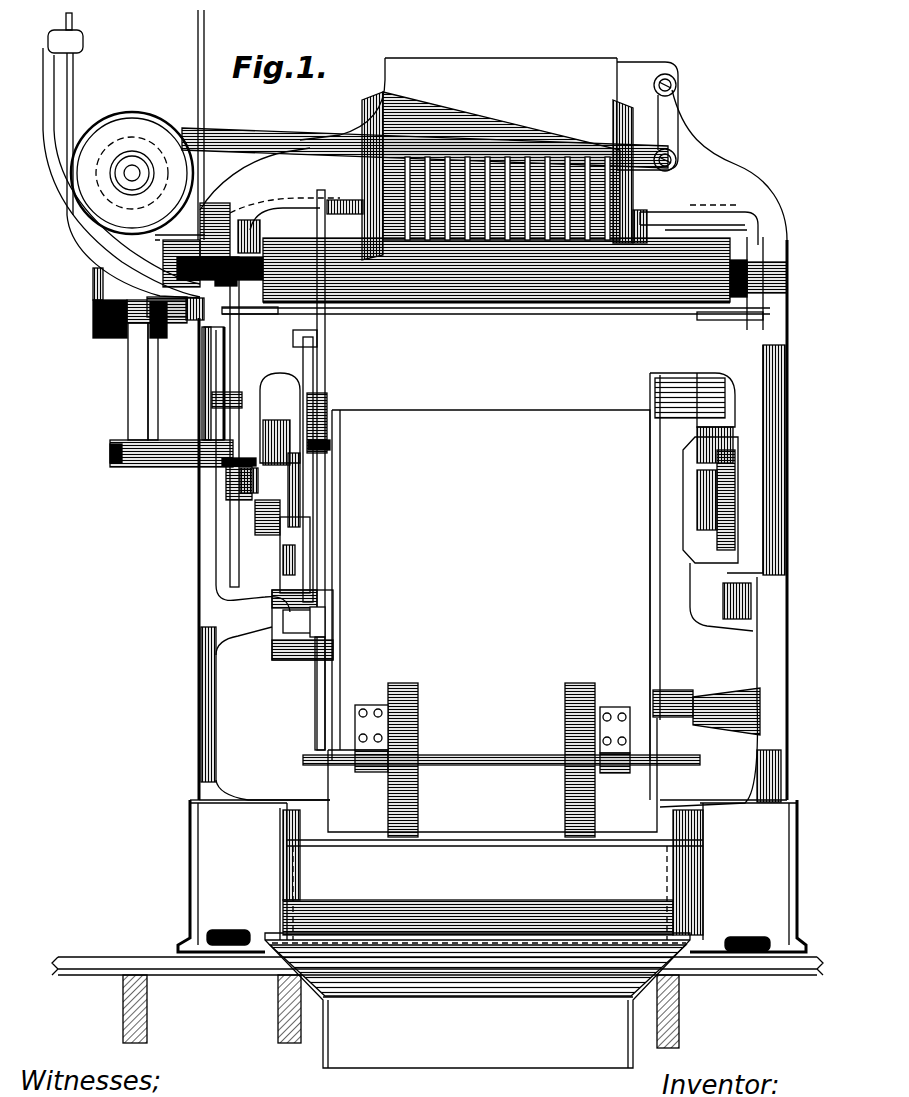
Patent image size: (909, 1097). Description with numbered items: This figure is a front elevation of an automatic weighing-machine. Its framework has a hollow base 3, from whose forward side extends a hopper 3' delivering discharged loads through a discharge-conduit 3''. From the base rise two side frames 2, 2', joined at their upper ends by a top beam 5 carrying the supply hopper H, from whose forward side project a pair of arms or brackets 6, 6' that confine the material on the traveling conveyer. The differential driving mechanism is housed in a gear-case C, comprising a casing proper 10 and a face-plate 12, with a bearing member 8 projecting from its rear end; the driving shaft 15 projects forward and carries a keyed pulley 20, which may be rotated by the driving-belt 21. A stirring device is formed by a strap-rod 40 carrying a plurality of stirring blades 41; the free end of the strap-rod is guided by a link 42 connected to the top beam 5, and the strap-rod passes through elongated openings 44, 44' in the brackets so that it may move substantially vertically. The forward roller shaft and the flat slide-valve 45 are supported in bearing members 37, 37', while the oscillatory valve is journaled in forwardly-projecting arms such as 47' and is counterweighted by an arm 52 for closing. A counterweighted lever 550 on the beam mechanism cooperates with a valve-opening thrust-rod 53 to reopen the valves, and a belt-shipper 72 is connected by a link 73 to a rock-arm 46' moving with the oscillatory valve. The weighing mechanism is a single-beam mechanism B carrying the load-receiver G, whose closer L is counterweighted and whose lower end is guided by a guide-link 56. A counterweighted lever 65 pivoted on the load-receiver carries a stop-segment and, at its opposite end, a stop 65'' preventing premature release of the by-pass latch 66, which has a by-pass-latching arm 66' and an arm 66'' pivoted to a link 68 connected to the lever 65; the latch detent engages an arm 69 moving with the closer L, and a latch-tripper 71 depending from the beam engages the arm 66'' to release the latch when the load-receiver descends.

The side frame 2 is at (247, 559).
The side frame 2' is at (733, 523).
The hollow base 3 is at (483, 876).
The hopper 3' is at (493, 871).
The discharge-conduit 3'' is at (477, 1000).
The top beam 5 is at (735, 175).
The arm or bracket 6 is at (361, 176).
The arm or bracket 6' is at (633, 171).
The bearing member 8 is at (176, 228).
The casing proper 10 is at (118, 338).
The face-plate 12 is at (94, 308).
The driving shaft or spindle 15 is at (128, 182).
The driving member or pulley 20 is at (150, 118).
The driving-belt 21 is at (197, 36).
The bearing member 37 is at (195, 383).
The bearing member 37' is at (730, 335).
The strap-rod 40 is at (285, 140).
The stirring arms or blades 41 is at (547, 228).
The link 42 is at (668, 118).
The elongated opening 44 is at (501, 166).
The elongated opening 44' is at (582, 133).
The reciprocatory valve or slide-valve 45 is at (278, 314).
The rock-arm 46' is at (195, 261).
The forwardly-projecting arm 47' is at (727, 267).
The counterweighted arm 52 is at (238, 194).
The valve-opening thrust-rod 53 is at (233, 350).
The guide-link 56 is at (683, 722).
The swinging member or lever 65 is at (325, 470).
The stop 65'' is at (351, 585).
The latch 66 is at (302, 625).
The by-pass-latching arm 66' is at (340, 620).
The arm of the latch 66'' is at (251, 609).
The connecting rod or link 68 is at (308, 500).
The arm 69 is at (315, 680).
The latch-tripper 71 is at (283, 556).
The belt-shipper 72 is at (70, 242).
The link 73 is at (200, 316).
The counterweighted lever 550 is at (228, 489).
The beam mechanism B is at (245, 498).
The gear-case C is at (85, 287).
The load-receiver G is at (491, 585).
The hopper or stream-supplying means H is at (458, 86).
The load discharger or closer L is at (501, 760).